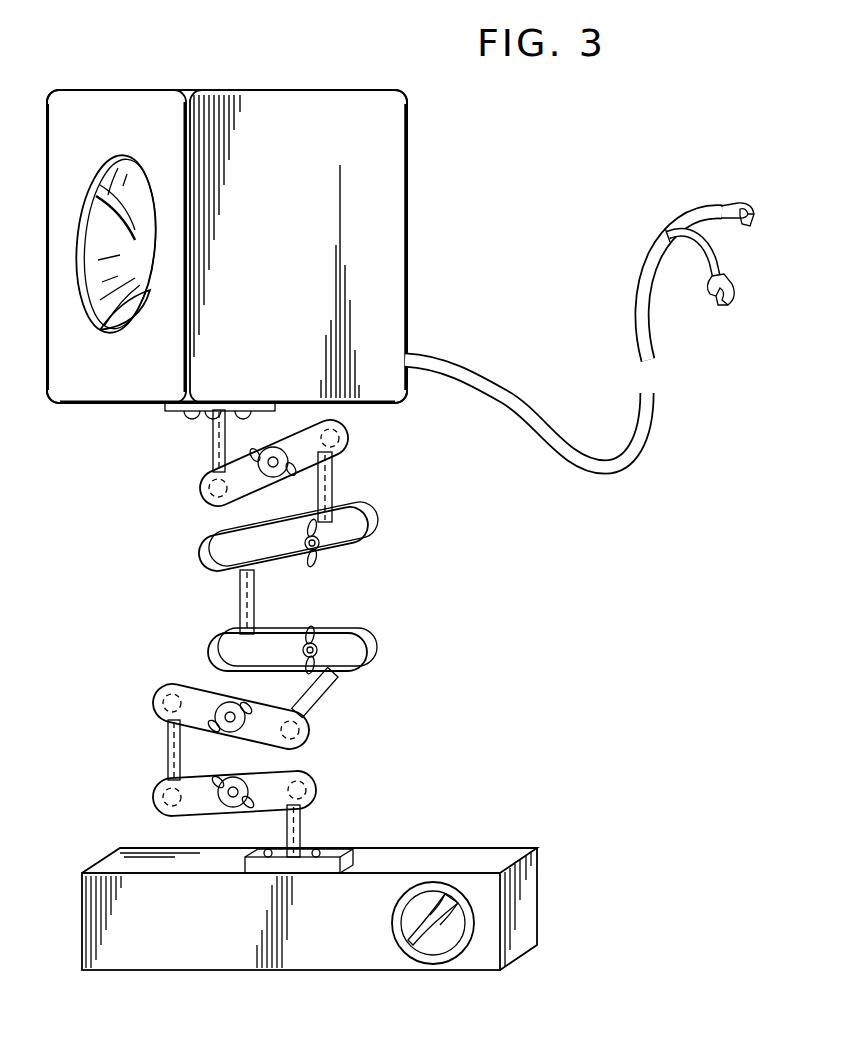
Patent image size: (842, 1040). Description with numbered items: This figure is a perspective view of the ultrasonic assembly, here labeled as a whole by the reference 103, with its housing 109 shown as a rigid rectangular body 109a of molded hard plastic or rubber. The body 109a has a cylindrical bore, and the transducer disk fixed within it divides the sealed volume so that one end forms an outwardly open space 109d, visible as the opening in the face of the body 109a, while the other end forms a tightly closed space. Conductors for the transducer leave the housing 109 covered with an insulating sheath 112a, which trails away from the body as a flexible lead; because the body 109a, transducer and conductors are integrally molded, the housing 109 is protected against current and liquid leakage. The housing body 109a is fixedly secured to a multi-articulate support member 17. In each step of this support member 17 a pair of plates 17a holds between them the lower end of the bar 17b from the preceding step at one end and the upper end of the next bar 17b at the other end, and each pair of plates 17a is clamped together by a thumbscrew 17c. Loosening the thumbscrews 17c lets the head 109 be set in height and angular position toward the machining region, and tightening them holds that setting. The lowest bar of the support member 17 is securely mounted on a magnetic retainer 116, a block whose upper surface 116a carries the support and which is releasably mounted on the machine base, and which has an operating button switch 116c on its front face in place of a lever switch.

The illuminating device 103 is at (580, 590).
The housing 109 is at (409, 148).
The rigid rectangular body 109a is at (297, 110).
The outwardly open space 109d is at (105, 330).
The insulating sheath 112a is at (513, 397).
The multi-articulate support member 17 is at (146, 503).
The plates 17a is at (230, 528).
The bar 17b is at (333, 480).
The thumbscrews 17c is at (318, 552).
The magnetic retainer 116 is at (489, 843).
The base top surface 116a is at (377, 887).
The operating button switch 116c is at (410, 932).